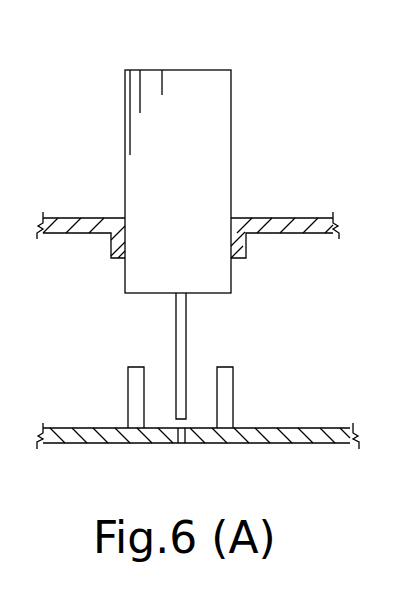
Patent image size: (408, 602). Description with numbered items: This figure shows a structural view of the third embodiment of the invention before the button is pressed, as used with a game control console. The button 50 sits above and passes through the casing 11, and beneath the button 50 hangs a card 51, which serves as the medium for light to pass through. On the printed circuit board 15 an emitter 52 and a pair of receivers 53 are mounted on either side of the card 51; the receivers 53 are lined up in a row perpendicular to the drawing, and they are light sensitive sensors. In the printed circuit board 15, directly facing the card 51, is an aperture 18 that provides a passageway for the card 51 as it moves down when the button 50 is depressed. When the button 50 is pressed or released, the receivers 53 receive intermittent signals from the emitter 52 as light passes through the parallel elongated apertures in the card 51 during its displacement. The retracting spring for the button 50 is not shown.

The button 50 is at (186, 89).
The casing 11 is at (303, 221).
The card 51 is at (187, 318).
The emitter 52 is at (127, 390).
The receiver 53 is at (234, 387).
The printed circuit board 15 is at (323, 427).
The aperture 18 is at (182, 445).